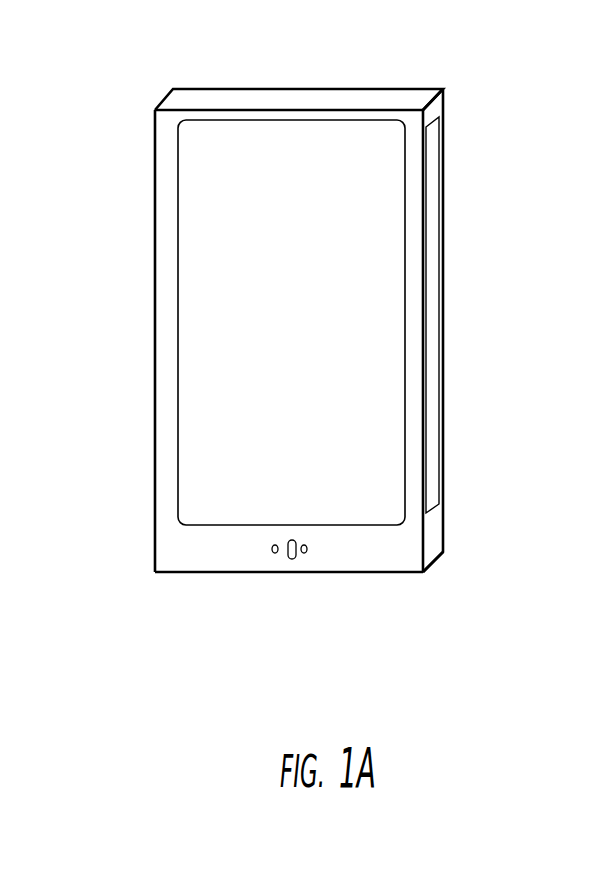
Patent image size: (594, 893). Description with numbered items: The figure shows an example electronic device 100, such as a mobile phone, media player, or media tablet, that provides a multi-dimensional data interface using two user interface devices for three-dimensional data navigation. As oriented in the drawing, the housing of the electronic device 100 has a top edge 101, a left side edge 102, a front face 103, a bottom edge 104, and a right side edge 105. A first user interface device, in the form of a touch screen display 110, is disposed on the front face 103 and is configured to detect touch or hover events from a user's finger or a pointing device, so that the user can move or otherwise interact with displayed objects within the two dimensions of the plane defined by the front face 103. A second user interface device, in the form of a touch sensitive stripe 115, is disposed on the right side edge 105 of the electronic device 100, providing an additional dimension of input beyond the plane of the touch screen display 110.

The electronic device 100 is at (422, 88).
The top edge 101 is at (324, 98).
The left side edge 102 is at (153, 381).
The front face 103 is at (374, 546).
The bottom edge 104 is at (206, 577).
The right side edge 105 is at (441, 529).
The touch screen display 110 is at (210, 188).
The touch sensitive stripe 115 is at (446, 190).